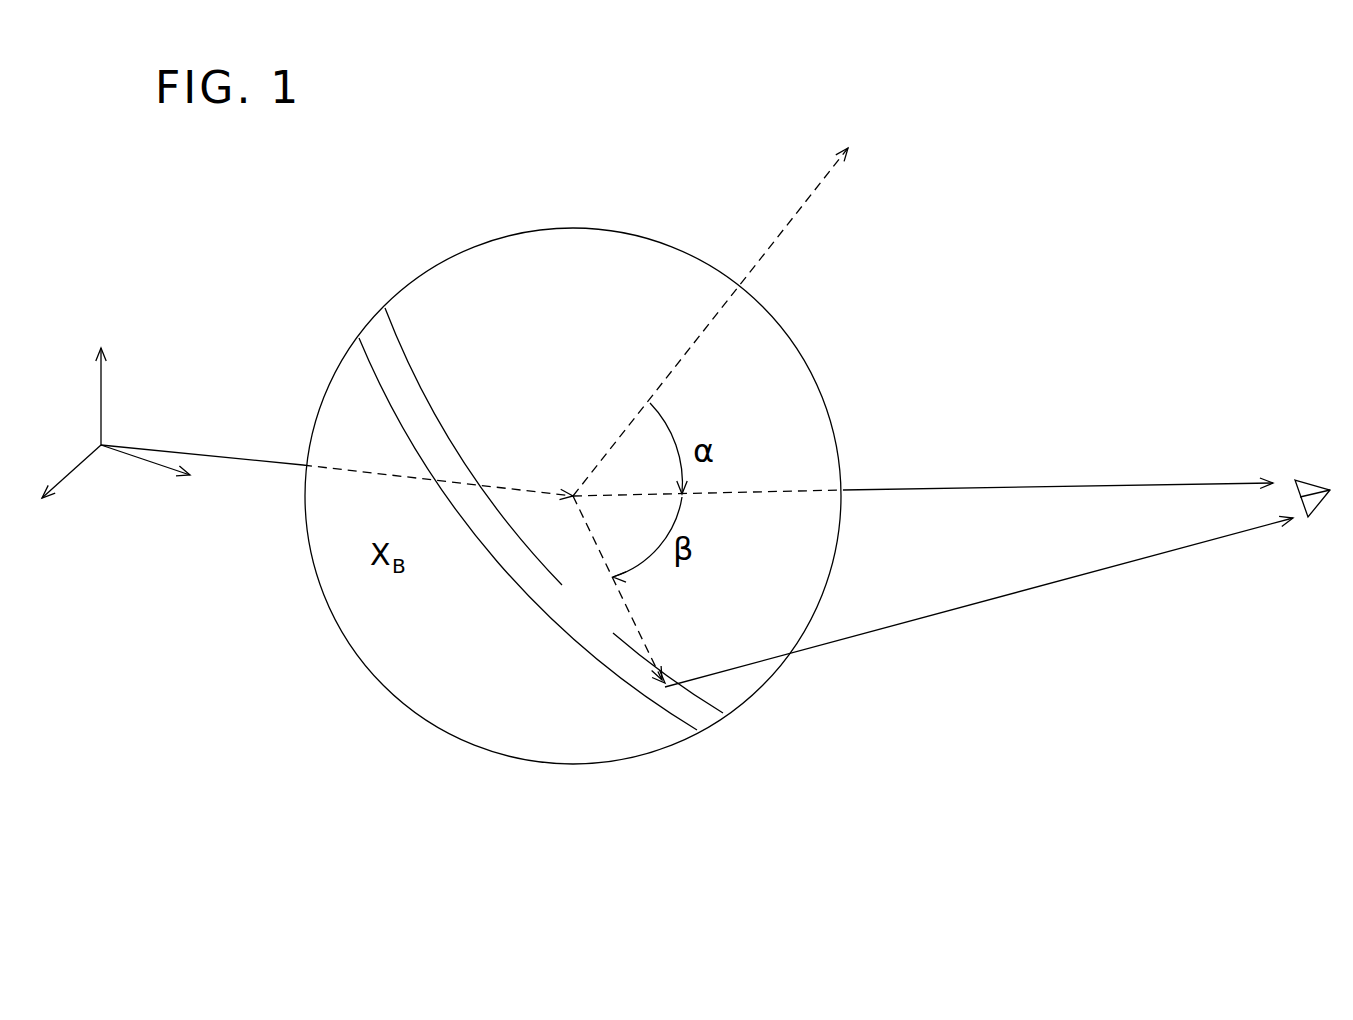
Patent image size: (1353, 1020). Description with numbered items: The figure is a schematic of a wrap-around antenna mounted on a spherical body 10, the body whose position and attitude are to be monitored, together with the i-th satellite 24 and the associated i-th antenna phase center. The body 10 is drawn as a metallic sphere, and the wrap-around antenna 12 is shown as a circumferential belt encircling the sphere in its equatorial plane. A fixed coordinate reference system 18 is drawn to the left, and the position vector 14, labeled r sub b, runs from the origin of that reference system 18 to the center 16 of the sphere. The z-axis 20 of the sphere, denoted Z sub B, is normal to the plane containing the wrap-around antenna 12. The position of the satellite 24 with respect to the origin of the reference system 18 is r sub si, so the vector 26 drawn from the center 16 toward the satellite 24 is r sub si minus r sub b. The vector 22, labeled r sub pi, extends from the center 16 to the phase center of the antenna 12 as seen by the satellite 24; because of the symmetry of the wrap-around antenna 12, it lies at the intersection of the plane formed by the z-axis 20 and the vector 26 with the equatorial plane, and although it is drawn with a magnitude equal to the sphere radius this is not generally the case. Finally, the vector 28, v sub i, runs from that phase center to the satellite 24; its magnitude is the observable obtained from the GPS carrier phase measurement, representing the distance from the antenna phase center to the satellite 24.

The body 10 is at (483, 247).
The wrap-around antenna 12 is at (402, 402).
The position vector 14 is at (275, 465).
The center 16 is at (570, 492).
The fixed coordinate reference system 18 is at (101, 397).
The z-axis 20 is at (780, 237).
The vector r_pi 22 is at (563, 587).
The satellite 24 is at (1315, 512).
The vector r_si minus r_b 26 is at (1020, 487).
The vector v_i 28 is at (900, 625).